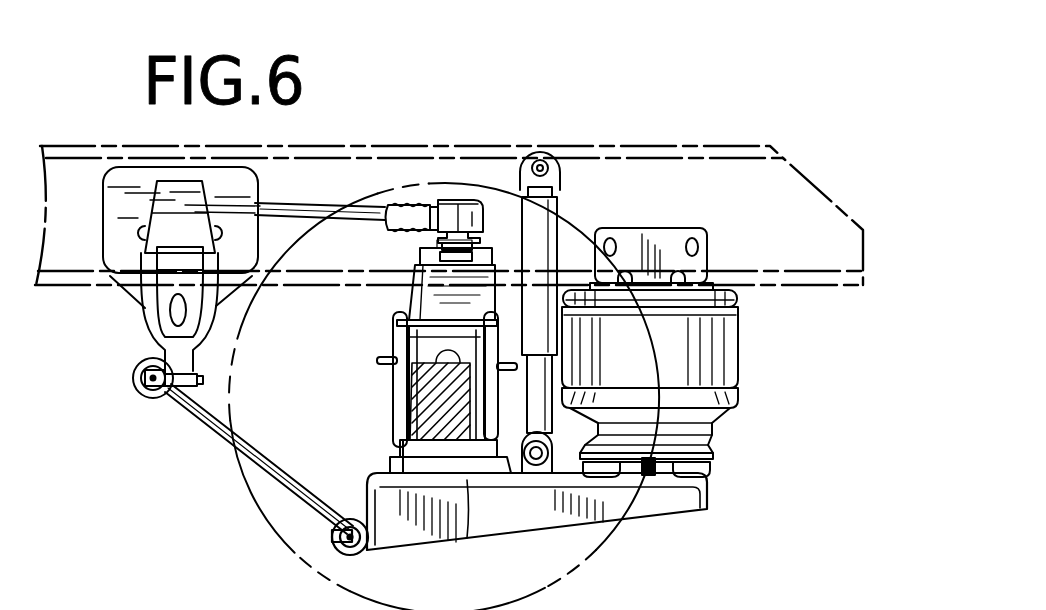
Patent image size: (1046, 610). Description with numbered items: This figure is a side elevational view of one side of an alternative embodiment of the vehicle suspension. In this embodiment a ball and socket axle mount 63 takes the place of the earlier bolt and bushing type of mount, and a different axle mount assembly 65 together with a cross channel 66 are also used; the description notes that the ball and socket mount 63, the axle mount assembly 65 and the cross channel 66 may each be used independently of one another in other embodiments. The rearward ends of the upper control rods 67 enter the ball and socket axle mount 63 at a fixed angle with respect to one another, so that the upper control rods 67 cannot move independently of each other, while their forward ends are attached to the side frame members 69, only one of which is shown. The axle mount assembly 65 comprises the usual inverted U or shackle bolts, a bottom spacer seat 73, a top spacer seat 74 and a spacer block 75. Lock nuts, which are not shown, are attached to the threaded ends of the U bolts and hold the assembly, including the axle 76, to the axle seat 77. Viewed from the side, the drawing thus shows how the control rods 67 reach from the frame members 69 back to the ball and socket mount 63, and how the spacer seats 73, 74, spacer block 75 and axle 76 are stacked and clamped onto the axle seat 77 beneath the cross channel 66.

The ball and socket axle mount 63 is at (496, 256).
The axle mount assembly 65 is at (358, 457).
The cross channel 66 is at (710, 466).
The upper control rods 67 is at (296, 205).
The side frame members 69 is at (627, 148).
The bottom spacer seat 73 is at (468, 538).
The top spacer seat 74 is at (383, 358).
The spacer block 75 is at (395, 325).
The axle 76 is at (423, 408).
The axle seat 77 is at (393, 405).